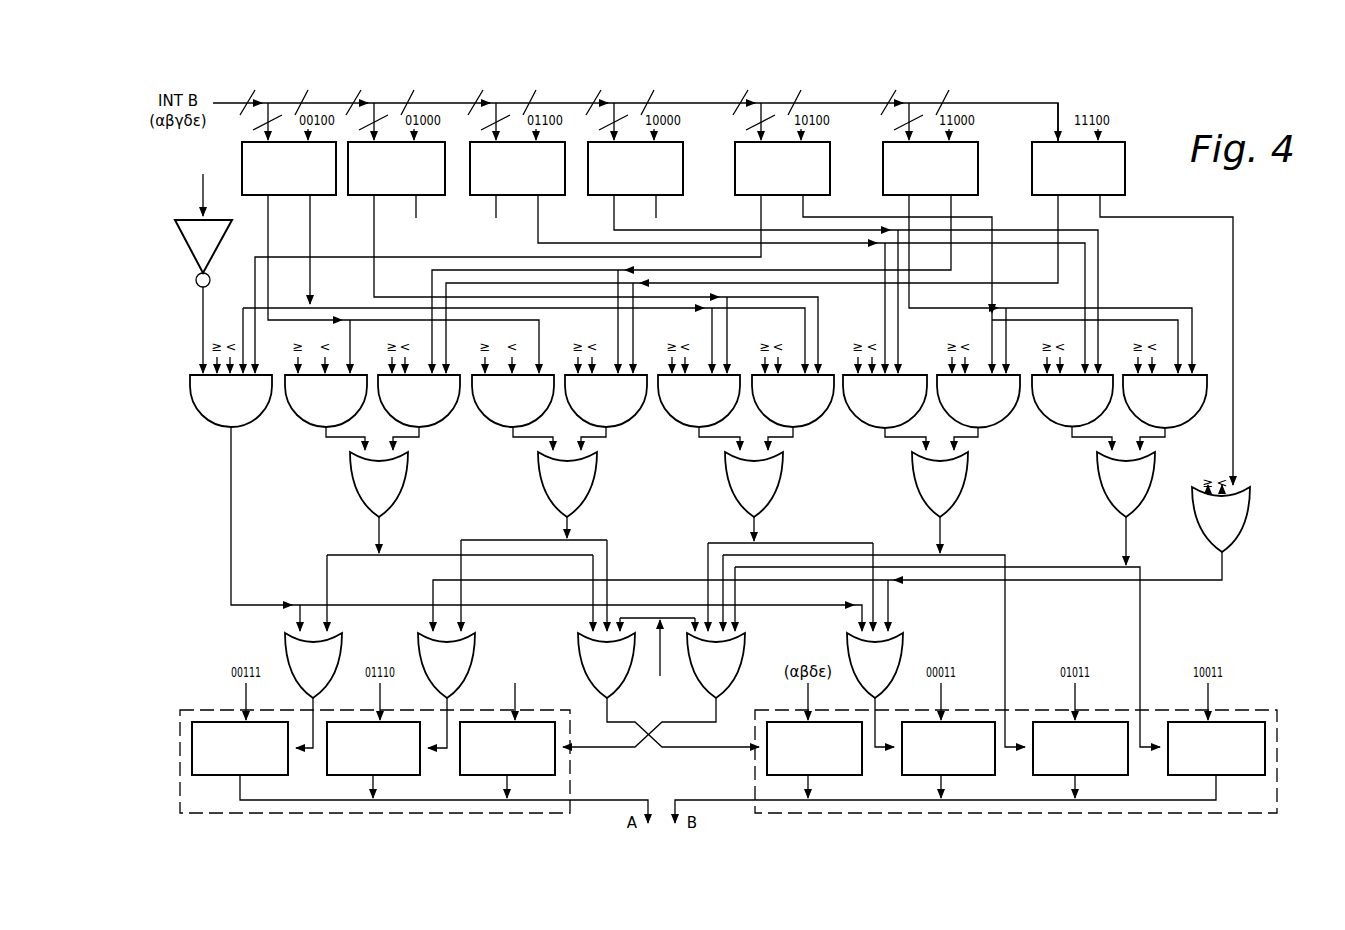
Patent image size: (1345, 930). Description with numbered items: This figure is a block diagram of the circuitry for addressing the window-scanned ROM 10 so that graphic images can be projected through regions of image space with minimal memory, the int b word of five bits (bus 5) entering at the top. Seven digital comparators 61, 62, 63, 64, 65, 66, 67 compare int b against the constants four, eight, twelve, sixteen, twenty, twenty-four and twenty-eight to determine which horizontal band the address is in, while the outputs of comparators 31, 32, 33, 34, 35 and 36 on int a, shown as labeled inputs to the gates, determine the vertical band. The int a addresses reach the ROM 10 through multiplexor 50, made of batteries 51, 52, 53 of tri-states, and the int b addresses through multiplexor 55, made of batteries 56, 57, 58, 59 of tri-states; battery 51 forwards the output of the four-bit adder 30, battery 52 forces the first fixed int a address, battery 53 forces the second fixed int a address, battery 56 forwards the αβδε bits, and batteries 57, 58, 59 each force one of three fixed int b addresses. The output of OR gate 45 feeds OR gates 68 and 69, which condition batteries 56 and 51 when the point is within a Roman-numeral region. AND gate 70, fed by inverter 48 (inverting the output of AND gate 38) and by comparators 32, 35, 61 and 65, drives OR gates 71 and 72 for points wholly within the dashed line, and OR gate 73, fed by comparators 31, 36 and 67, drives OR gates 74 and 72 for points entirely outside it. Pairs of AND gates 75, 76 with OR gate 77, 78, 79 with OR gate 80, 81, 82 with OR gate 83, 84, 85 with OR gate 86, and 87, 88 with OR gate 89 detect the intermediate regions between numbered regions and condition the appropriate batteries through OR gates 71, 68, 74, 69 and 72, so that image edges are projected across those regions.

The five-bit bus 5 is at (635, 110).
The ROM 10 is at (670, 846).
The 4-bit adder 30 is at (515, 691).
The digital comparator 31 is at (940, 397).
The digital comparator 32 is at (591, 329).
The digital comparator 33 is at (365, 329).
The digital comparator 34 is at (531, 329).
The digital comparator 35 is at (685, 329).
The digital comparator 36 is at (1000, 397).
The AND gate 38 is at (203, 185).
The OR gate 45 is at (657, 661).
The logic inverter 48 is at (188, 240).
The multiplexor 50 is at (572, 790).
The battery of tri-states 51 is at (476, 777).
The battery of tri-states 52 is at (232, 778).
The battery of tri-states 53 is at (343, 777).
The multiplexor 55 is at (755, 768).
The battery of tri-states 56 is at (840, 777).
The battery of tri-states 57 is at (975, 777).
The battery of tri-states 58 is at (1108, 777).
The battery of tri-states 59 is at (1228, 777).
The digital comparator 61 is at (258, 200).
The digital comparator 62 is at (366, 192).
The digital comparator 63 is at (476, 194).
The digital comparator 64 is at (594, 194).
The digital comparator 65 is at (735, 175).
The digital comparator 66 is at (883, 165).
The digital comparator 67 is at (1032, 162).
The OR gate 68 is at (578, 655).
The OR gate 69 is at (740, 665).
The AND gate 70 is at (200, 420).
The OR gate 71 is at (285, 655).
The OR gate 72 is at (903, 642).
The OR gate 73 is at (1198, 535).
The OR gate 74 is at (418, 655).
The AND gate 75 is at (294, 420).
The AND gate 76 is at (450, 418).
The OR gate 77 is at (358, 504).
The AND gate 78 is at (482, 418).
The AND gate 79 is at (634, 424).
The OR gate 80 is at (545, 505).
The AND gate 81 is at (670, 416).
The AND gate 82 is at (826, 420).
The OR gate 83 is at (736, 504).
The AND gate 84 is at (860, 416).
The AND gate 85 is at (1012, 416).
The OR gate 86 is at (924, 504).
The AND gate 87 is at (1062, 424).
The AND gate 88 is at (1207, 420).
The OR gate 89 is at (1102, 503).